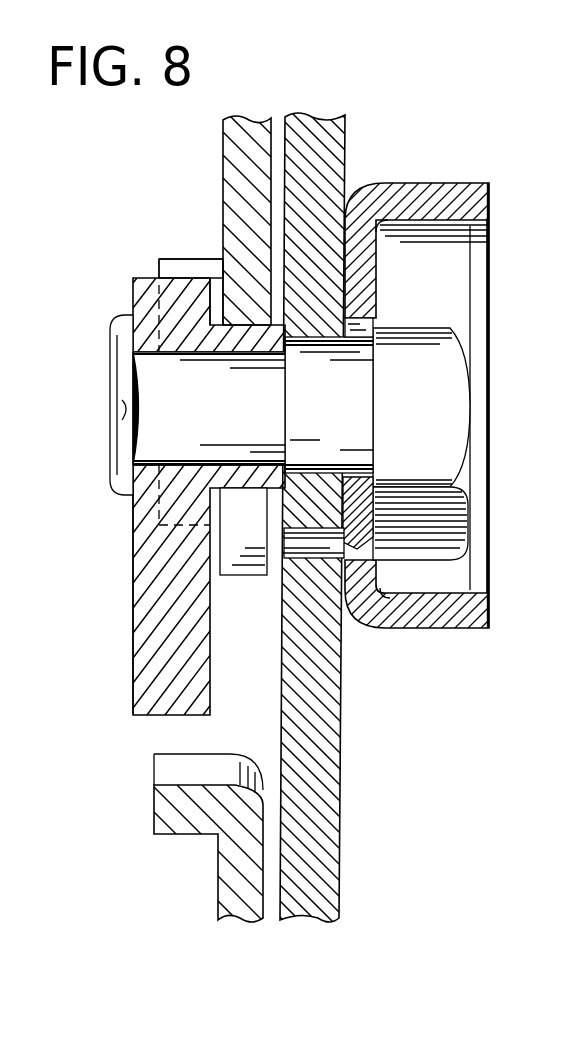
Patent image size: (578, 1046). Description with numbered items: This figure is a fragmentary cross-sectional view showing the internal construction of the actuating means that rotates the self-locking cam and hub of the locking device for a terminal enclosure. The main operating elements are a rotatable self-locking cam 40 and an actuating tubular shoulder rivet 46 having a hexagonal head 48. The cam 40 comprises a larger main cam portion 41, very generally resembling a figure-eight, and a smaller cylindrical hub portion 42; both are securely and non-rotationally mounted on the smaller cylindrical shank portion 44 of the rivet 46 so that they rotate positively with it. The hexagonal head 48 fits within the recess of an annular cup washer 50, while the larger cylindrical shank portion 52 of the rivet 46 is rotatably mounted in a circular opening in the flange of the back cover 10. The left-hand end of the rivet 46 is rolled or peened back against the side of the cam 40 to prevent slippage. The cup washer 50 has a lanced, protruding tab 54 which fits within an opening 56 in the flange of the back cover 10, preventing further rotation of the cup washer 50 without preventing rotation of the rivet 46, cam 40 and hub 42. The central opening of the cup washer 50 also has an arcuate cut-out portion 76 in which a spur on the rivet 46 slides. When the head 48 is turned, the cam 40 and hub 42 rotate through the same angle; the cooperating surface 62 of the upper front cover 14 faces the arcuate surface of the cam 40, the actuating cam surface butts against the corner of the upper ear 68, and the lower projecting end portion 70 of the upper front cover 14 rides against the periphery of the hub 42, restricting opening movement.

The back cover 10 is at (330, 116).
The upper front cover 14 is at (222, 153).
The self-locking cam 40 is at (133, 575).
The main cam portion 41 is at (133, 679).
The hub portion 42 is at (238, 292).
The smaller cylindrical shank portion 44 is at (209, 408).
The tubular shoulder rivet 46 is at (112, 422).
The hexagonal head 48 is at (455, 410).
The cup washer 50 is at (436, 183).
The larger cylindrical shank portion 52 is at (329, 405).
The protruding tab 54 is at (360, 541).
The opening 56 is at (292, 556).
The cooperating surface 62 is at (160, 775).
The upper ear 68 is at (160, 270).
The lower projecting end portion 70 is at (243, 531).
The arcuate cut-out portion 76 is at (362, 326).